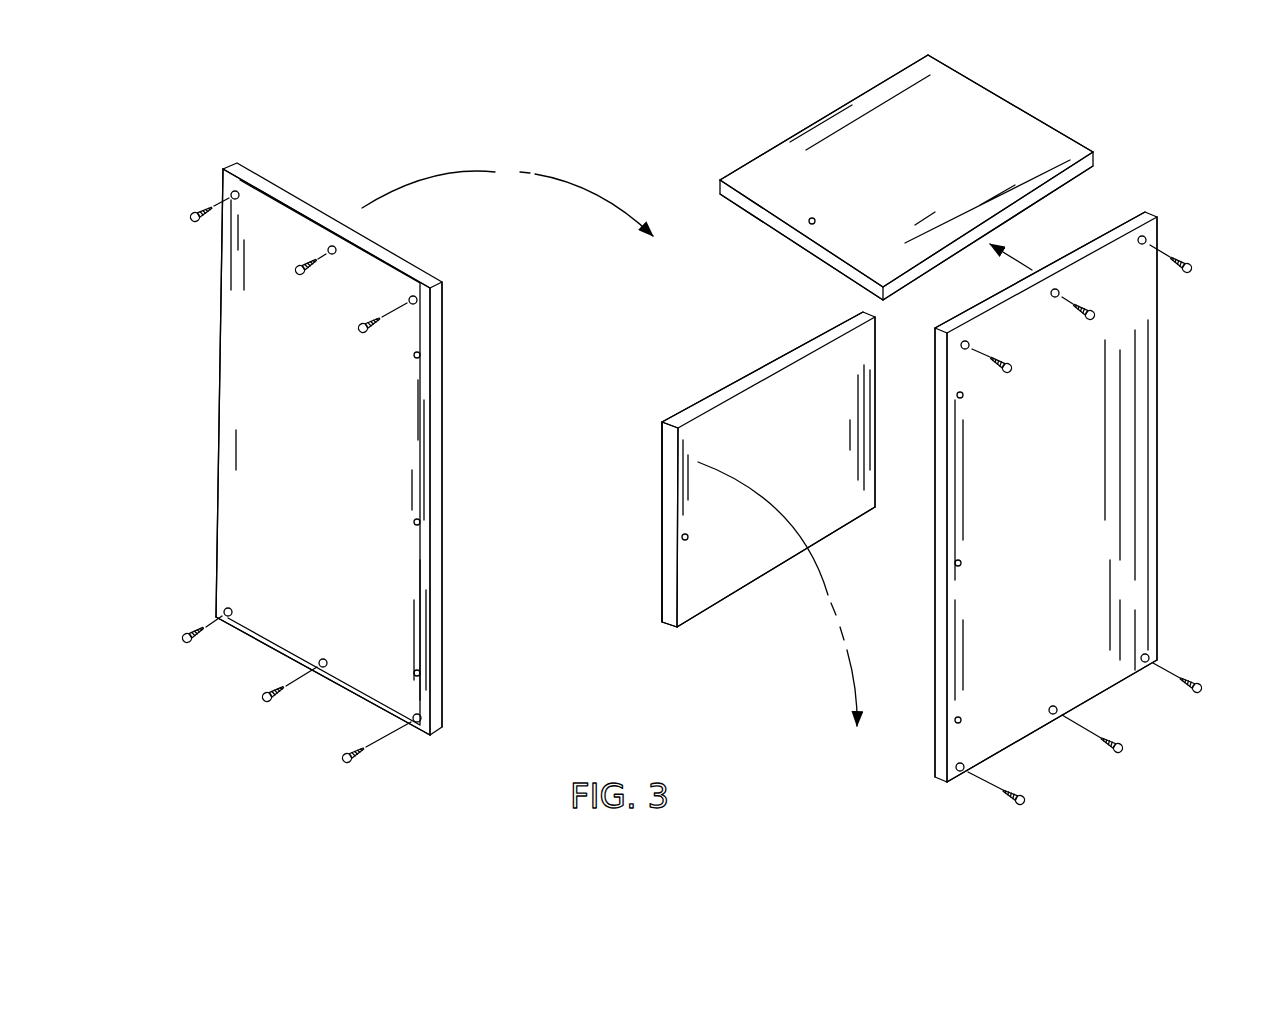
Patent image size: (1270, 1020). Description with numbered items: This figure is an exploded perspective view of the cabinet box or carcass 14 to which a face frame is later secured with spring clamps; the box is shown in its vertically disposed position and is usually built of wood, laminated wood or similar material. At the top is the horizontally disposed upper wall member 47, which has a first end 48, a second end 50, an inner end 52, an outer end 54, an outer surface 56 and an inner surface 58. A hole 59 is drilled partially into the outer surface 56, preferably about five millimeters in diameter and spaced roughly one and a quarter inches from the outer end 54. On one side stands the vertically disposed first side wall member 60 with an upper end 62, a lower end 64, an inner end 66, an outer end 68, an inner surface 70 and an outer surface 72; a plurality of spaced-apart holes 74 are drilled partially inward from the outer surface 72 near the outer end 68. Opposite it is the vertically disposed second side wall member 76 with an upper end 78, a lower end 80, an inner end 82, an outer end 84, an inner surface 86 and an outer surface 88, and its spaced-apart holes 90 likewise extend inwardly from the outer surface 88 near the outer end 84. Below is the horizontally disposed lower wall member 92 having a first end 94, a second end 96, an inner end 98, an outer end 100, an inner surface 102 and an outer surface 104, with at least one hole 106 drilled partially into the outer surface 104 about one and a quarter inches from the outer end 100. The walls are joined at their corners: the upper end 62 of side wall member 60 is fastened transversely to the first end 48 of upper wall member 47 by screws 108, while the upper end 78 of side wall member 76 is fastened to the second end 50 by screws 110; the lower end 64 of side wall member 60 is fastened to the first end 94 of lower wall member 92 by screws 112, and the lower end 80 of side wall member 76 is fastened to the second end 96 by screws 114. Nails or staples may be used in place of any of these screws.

The cabinet box 14 is at (650, 186).
The upper wall member 47 is at (966, 67).
The first end 48 is at (808, 127).
The second end 50 is at (992, 220).
The inner end 52 is at (1043, 118).
The outer end 54 is at (823, 248).
The outer surface 56 is at (909, 172).
The inner surface 58 is at (850, 285).
The hole 59 is at (806, 220).
The first side wall member 60 is at (312, 194).
The upper end 62 is at (400, 262).
The lower end 64 is at (312, 672).
The inner end 66 is at (215, 405).
The outer end 68 is at (438, 593).
The inner surface 70 is at (450, 502).
The outer surface 72 is at (300, 463).
The holes 74 is at (417, 360).
The second side wall member 76 is at (1120, 480).
The upper end 78 is at (1107, 233).
The lower end 80 is at (1012, 747).
The inner end 82 is at (1158, 548).
The outer end 84 is at (937, 600).
The inner surface 86 is at (937, 572).
The outer surface 88 is at (1056, 550).
The holes 90 is at (958, 400).
The lower wall member 92 is at (718, 375).
The first end 94 is at (730, 598).
The second end 96 is at (768, 362).
The inner end 98 is at (877, 423).
The outer end 100 is at (663, 523).
The inner surface 102 is at (655, 488).
The outer surface 104 is at (779, 467).
The hole 106 is at (686, 540).
The screws 108 is at (355, 324).
The screws 110 is at (1014, 366).
The screws 112 is at (258, 695).
The screws 114 is at (1127, 750).